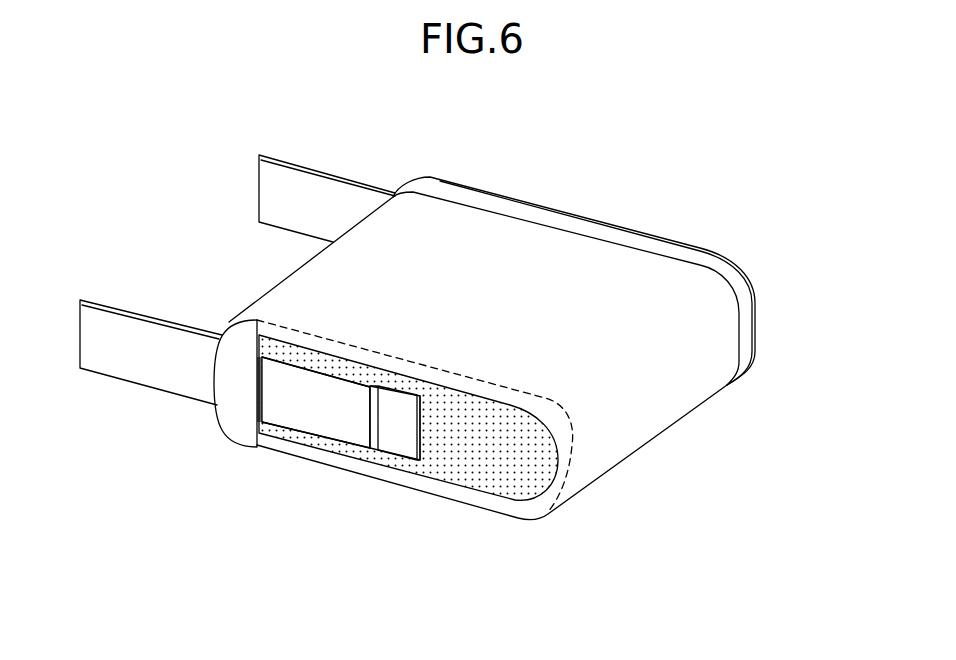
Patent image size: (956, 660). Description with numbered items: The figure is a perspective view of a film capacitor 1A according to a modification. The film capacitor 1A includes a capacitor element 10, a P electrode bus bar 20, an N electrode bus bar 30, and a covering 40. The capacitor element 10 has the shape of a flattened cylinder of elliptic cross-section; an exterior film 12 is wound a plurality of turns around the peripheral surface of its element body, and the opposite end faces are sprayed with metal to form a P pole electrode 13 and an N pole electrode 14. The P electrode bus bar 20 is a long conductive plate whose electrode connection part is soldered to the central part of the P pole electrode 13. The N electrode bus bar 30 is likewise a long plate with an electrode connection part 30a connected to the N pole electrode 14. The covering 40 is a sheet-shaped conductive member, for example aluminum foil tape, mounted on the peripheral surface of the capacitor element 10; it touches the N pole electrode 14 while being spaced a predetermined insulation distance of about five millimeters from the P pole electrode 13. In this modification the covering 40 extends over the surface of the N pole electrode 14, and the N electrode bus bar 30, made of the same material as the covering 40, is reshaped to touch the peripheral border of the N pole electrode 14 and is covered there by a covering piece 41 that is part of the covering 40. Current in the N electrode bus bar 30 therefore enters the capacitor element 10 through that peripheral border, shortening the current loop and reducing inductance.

The film capacitor 1A is at (730, 242).
The capacitor element 10 is at (647, 228).
The exterior film 12 is at (448, 185).
The P pole electrode 13 is at (507, 193).
The N pole electrode 14 is at (473, 463).
The P electrode bus bar 20 is at (290, 208).
The N electrode bus bar 30 is at (165, 368).
The electrode connection part 30a is at (402, 437).
The covering 40 is at (640, 423).
The covering piece 41 is at (242, 395).